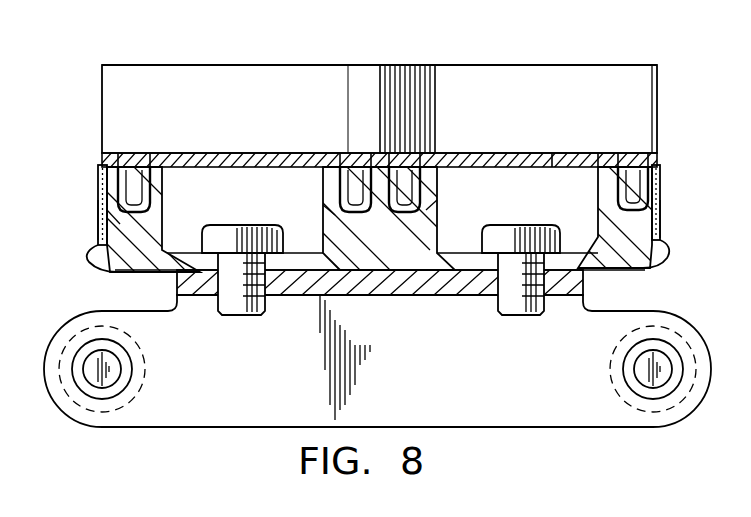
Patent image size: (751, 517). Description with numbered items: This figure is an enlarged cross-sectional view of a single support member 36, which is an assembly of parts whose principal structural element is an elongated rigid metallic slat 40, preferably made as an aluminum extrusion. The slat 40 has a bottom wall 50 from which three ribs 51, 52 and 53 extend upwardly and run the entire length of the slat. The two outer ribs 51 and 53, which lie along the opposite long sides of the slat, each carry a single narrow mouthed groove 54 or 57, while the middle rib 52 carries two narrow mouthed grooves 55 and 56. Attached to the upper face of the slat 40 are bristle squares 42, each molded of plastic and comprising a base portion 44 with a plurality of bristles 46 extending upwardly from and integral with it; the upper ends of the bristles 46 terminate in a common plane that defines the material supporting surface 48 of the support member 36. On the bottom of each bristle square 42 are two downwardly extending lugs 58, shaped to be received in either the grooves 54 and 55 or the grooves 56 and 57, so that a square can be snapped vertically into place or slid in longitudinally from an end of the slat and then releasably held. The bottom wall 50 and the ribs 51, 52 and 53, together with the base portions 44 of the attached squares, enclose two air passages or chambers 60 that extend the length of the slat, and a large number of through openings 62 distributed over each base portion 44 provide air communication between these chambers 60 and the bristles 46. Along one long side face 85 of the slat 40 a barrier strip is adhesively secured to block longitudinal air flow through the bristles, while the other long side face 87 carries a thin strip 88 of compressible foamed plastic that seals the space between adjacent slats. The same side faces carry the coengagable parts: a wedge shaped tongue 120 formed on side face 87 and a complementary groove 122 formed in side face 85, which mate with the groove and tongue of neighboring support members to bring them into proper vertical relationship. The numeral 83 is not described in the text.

The support member 36 is at (192, 65).
The slat 40 is at (380, 284).
The bristle square 42 is at (262, 86).
The base portion 44 is at (226, 168).
The bristles 46 is at (430, 100).
The material supporting surface 48 is at (348, 65).
The bottom wall 50 is at (583, 272).
The rib 51 is at (125, 231).
The middle rib 52 is at (435, 247).
The rib 53 is at (606, 233).
The groove 54 is at (150, 206).
The groove 55 is at (332, 206).
The groove 56 is at (424, 204).
The groove 57 is at (680, 218).
The lug 58 is at (151, 186).
The air passage 60 is at (318, 258).
The through opening 62 is at (563, 136).
The board edge 83 is at (659, 114).
The side face 85 is at (680, 196).
The side face 87 is at (98, 216).
The strip 88 is at (99, 187).
The tongue 120 is at (87, 263).
The groove 122 is at (662, 256).